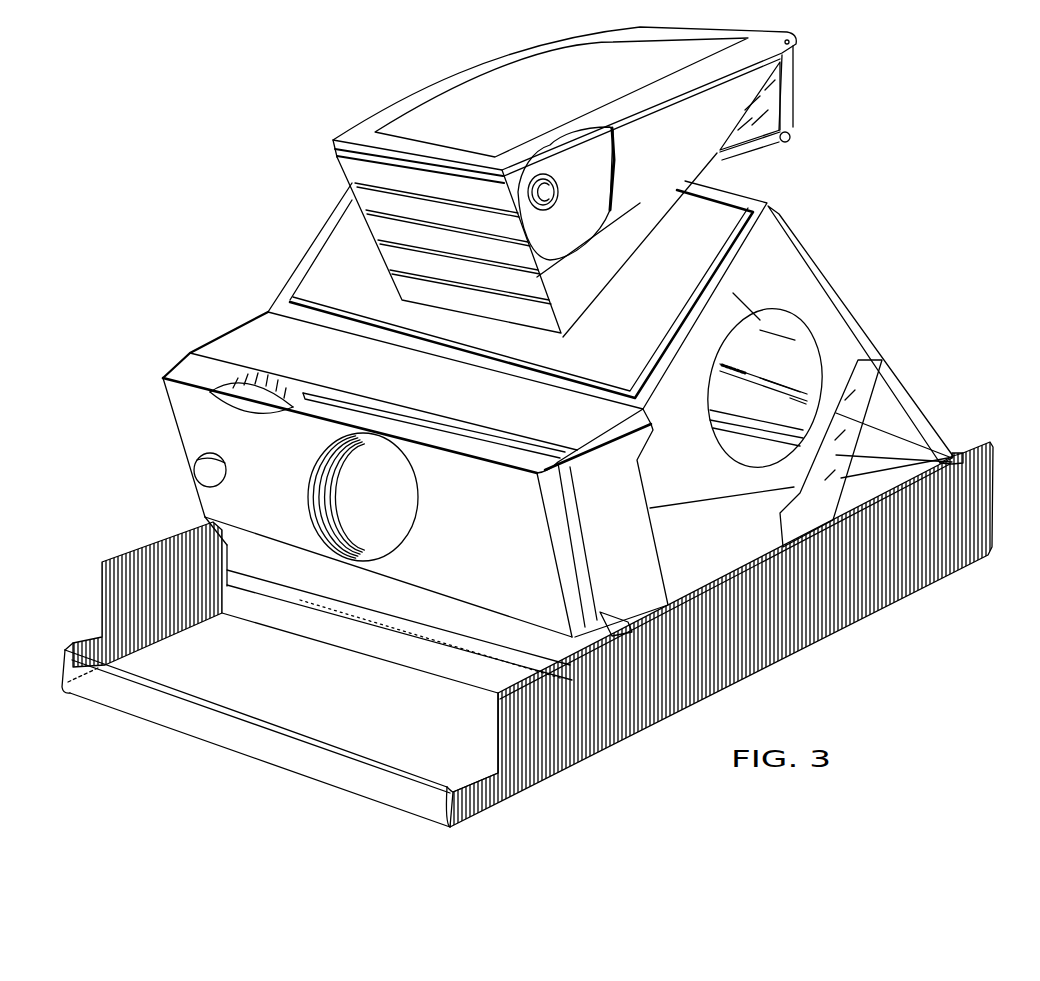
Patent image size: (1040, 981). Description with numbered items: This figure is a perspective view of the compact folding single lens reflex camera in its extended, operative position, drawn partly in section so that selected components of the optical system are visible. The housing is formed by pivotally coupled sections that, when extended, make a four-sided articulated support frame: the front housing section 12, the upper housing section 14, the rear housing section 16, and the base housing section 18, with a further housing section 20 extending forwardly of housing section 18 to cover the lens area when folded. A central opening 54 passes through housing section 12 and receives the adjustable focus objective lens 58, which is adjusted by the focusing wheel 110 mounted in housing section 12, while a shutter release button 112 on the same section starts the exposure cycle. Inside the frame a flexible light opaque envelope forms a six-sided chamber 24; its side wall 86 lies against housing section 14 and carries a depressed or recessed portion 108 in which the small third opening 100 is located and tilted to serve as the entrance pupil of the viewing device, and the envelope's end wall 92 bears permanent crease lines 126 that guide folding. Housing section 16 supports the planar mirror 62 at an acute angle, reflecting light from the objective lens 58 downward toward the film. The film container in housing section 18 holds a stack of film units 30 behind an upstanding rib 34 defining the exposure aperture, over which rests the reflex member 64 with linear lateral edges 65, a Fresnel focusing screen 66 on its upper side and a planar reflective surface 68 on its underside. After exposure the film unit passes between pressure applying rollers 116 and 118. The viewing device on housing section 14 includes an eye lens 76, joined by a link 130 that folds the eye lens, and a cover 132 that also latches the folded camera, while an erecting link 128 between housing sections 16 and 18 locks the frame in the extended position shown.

The housing section 12 is at (145, 366).
The housing section 14 is at (272, 250).
The housing section 16 is at (889, 336).
The housing section 18 is at (941, 590).
The housing section 20 is at (595, 768).
The chamber 24 is at (718, 428).
The film unit 30 is at (764, 452).
The upstanding rib 34 is at (727, 412).
The central opening 54 is at (384, 557).
The objective lens 58 is at (396, 490).
The planar mirror 62 is at (800, 335).
The reflex member 64 is at (757, 366).
The linear lateral edges 65 is at (783, 383).
The focusing screen 66 is at (800, 391).
The planar reflective surface 68 is at (764, 402).
The eye lens 76 is at (786, 87).
The side wall 86 is at (558, 170).
The end wall 92 is at (693, 467).
The third opening 100 is at (533, 205).
The depressed or recessed portion 108 is at (556, 200).
The focusing wheel 110 is at (257, 403).
The shutter release button 112 is at (206, 477).
The pressure applying roller 116 is at (627, 625).
The pressure applying roller 118 is at (478, 640).
The crease lines 126 is at (893, 462).
The erecting link 128 is at (860, 410).
The link 130 is at (754, 165).
The cover 132 is at (422, 100).